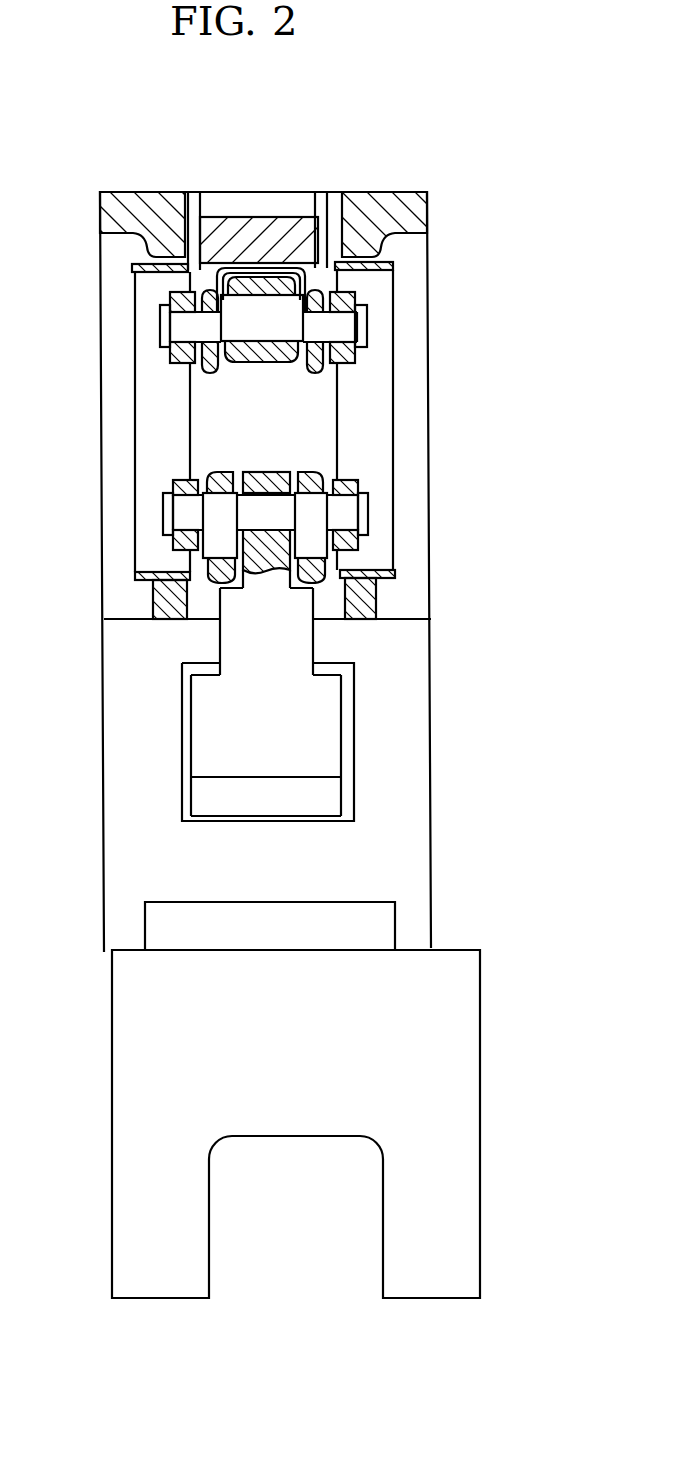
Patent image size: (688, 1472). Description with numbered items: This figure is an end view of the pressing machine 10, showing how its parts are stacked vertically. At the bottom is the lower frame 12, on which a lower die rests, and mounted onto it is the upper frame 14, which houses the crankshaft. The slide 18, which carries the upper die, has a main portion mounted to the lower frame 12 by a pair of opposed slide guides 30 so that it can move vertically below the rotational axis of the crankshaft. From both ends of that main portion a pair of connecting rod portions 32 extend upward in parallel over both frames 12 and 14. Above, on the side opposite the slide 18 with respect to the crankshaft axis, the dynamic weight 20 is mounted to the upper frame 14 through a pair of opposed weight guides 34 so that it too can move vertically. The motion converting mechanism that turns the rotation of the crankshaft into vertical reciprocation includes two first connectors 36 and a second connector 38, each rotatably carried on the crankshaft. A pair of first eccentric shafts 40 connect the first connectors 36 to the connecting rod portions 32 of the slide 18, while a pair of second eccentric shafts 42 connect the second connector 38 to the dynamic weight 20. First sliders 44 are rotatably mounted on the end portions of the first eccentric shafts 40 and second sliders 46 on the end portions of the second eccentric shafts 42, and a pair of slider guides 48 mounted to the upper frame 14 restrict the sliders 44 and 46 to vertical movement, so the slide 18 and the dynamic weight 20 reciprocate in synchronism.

The pressing machine 10 is at (366, 184).
The lower frame 12 is at (412, 870).
The upper frame 14 is at (404, 201).
The slide 18 is at (227, 760).
The dynamic weight 20 is at (283, 228).
The slide guides 30 is at (185, 798).
The connecting rod portions 32 is at (225, 639).
The weight guides 34 is at (196, 205).
The first connectors 36 is at (300, 473).
The second connector 38 is at (280, 357).
The first eccentric shafts 40 is at (163, 520).
The second eccentric shafts 42 is at (160, 333).
The first sliders 44 is at (182, 478).
The second sliders 46 is at (186, 364).
The slider guides 48 is at (140, 414).